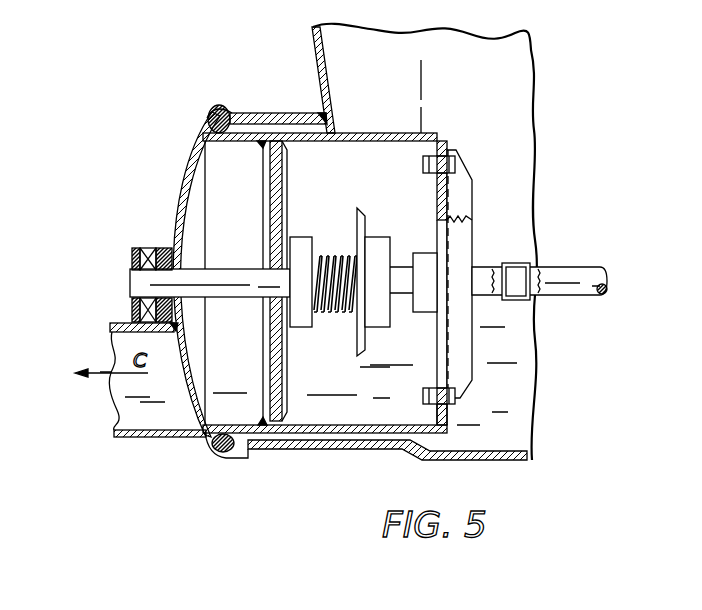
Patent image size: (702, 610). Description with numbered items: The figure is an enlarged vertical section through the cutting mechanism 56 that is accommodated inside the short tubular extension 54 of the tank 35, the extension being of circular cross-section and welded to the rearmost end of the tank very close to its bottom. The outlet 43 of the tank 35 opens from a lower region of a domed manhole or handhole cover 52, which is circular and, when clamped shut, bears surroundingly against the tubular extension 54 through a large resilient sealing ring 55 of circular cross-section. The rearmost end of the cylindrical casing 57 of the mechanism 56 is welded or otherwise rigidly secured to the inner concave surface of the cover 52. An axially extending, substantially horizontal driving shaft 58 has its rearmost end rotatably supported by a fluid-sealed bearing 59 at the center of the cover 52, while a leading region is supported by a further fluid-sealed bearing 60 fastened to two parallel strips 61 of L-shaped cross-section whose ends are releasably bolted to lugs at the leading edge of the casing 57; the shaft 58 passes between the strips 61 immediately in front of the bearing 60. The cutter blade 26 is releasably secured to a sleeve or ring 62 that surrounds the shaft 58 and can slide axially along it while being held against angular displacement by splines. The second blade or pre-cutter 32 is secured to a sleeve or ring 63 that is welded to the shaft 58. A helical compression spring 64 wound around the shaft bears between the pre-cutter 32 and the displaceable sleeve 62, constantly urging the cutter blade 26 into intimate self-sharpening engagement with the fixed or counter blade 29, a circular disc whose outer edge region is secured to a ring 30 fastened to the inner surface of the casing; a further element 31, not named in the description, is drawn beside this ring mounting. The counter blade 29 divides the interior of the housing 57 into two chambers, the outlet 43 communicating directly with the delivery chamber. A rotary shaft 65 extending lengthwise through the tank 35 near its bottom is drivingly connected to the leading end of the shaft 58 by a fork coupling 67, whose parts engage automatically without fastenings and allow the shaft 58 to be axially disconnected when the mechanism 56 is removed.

The cutter blade 26 is at (288, 372).
The fixed or counter blade 29 is at (275, 215).
The ring 30 is at (265, 154).
The bearing ring 31 is at (273, 183).
The second blade or pre-cutter 32 is at (383, 200).
The tank 35 is at (503, 48).
The outlet 43 is at (118, 345).
The domed manhole or handhole cover 52 is at (184, 160).
The short tubular extension 54 is at (297, 113).
The resilient sealing ring 55 is at (233, 104).
The cutting mechanism 56 is at (410, 101).
The cylindrical casing 57 is at (427, 133).
The driving shaft 58 is at (232, 270).
The fluid-sealed bearing 59 is at (155, 248).
The further fluid-sealed bearing 60 is at (424, 256).
The parallel strips 61 is at (471, 238).
The sleeve or ring 62 is at (302, 242).
The sleeve or ring 63 is at (383, 245).
The helical compression spring 64 is at (342, 313).
The rotary shaft 65 is at (600, 256).
The fork coupling 67 is at (513, 275).